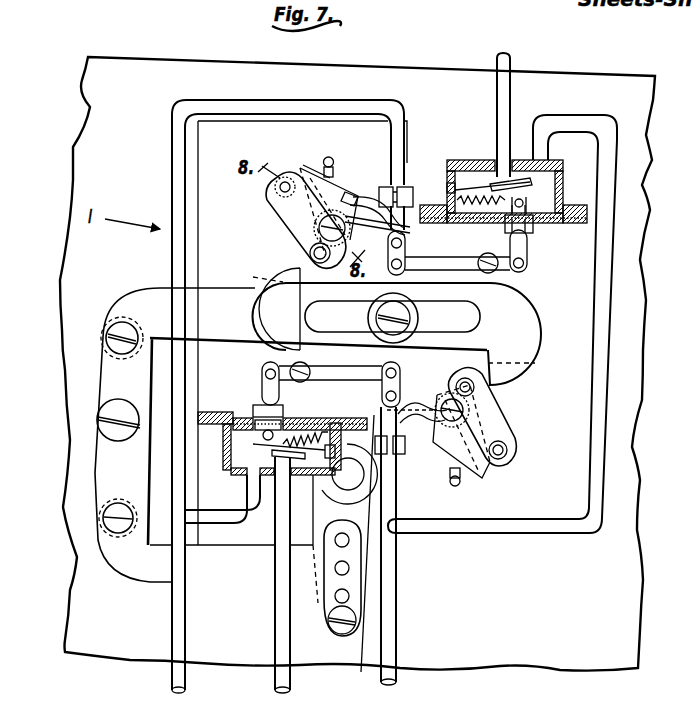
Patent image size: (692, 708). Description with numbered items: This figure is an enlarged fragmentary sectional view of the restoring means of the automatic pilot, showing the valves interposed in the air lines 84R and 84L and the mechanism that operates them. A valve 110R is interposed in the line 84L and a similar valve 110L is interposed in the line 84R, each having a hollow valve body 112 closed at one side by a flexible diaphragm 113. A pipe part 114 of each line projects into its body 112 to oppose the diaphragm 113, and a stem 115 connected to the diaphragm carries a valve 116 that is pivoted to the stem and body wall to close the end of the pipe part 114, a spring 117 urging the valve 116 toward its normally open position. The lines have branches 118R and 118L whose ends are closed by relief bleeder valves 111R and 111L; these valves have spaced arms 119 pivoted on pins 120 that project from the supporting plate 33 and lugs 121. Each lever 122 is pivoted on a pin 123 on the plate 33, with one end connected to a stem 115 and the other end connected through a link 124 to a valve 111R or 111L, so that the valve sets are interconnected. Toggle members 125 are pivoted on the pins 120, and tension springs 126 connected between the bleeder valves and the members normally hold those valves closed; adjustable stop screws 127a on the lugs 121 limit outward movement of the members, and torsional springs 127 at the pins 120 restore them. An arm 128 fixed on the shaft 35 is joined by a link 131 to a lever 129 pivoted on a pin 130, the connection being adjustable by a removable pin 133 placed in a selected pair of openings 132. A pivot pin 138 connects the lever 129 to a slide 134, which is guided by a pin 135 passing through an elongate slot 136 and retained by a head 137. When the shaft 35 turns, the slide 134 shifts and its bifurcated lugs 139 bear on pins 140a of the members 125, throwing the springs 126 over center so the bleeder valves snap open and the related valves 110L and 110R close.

The supporting plate 33 is at (357, 364).
The shaft 35 is at (364, 480).
The air line 84R is at (275, 647).
The air line 84L is at (552, 115).
The valve 110R is at (226, 414).
The valve 110L is at (474, 159).
The relief bleeder valve 111R is at (404, 231).
The relief bleeder valve 111L is at (382, 406).
The valve body 112 is at (556, 197).
The flexible diaphragm 113 is at (537, 225).
The pipe part 114 is at (500, 183).
The stem 115 is at (527, 252).
The valve 116 is at (512, 190).
The spring 117 is at (306, 432).
The branch 118R is at (398, 106).
The branch 118L is at (390, 468).
The spaced arms 119 is at (358, 203).
The pivot pin 120 is at (315, 230).
The lug 121 is at (346, 180).
The lever 122 is at (456, 268).
The pivot pin 123 is at (496, 274).
The link 124 is at (408, 252).
The toggle member 125 is at (298, 217).
The tension spring 126 is at (293, 205).
The torsional spring 127 is at (352, 190).
The adjustable stop screw 127a is at (326, 160).
The arm 128 is at (368, 500).
The lever 129 is at (118, 385).
The pin 130 is at (110, 413).
The link 131 is at (146, 588).
The openings 132 is at (346, 568).
The removable pin 133 is at (346, 614).
The slide 134 is at (497, 307).
The pin 135 is at (418, 320).
The elongate slot 136 is at (490, 322).
The head 137 is at (376, 323).
The pivot pin 138 is at (112, 342).
The lug 139 is at (295, 284).
The pin 140a is at (302, 252).